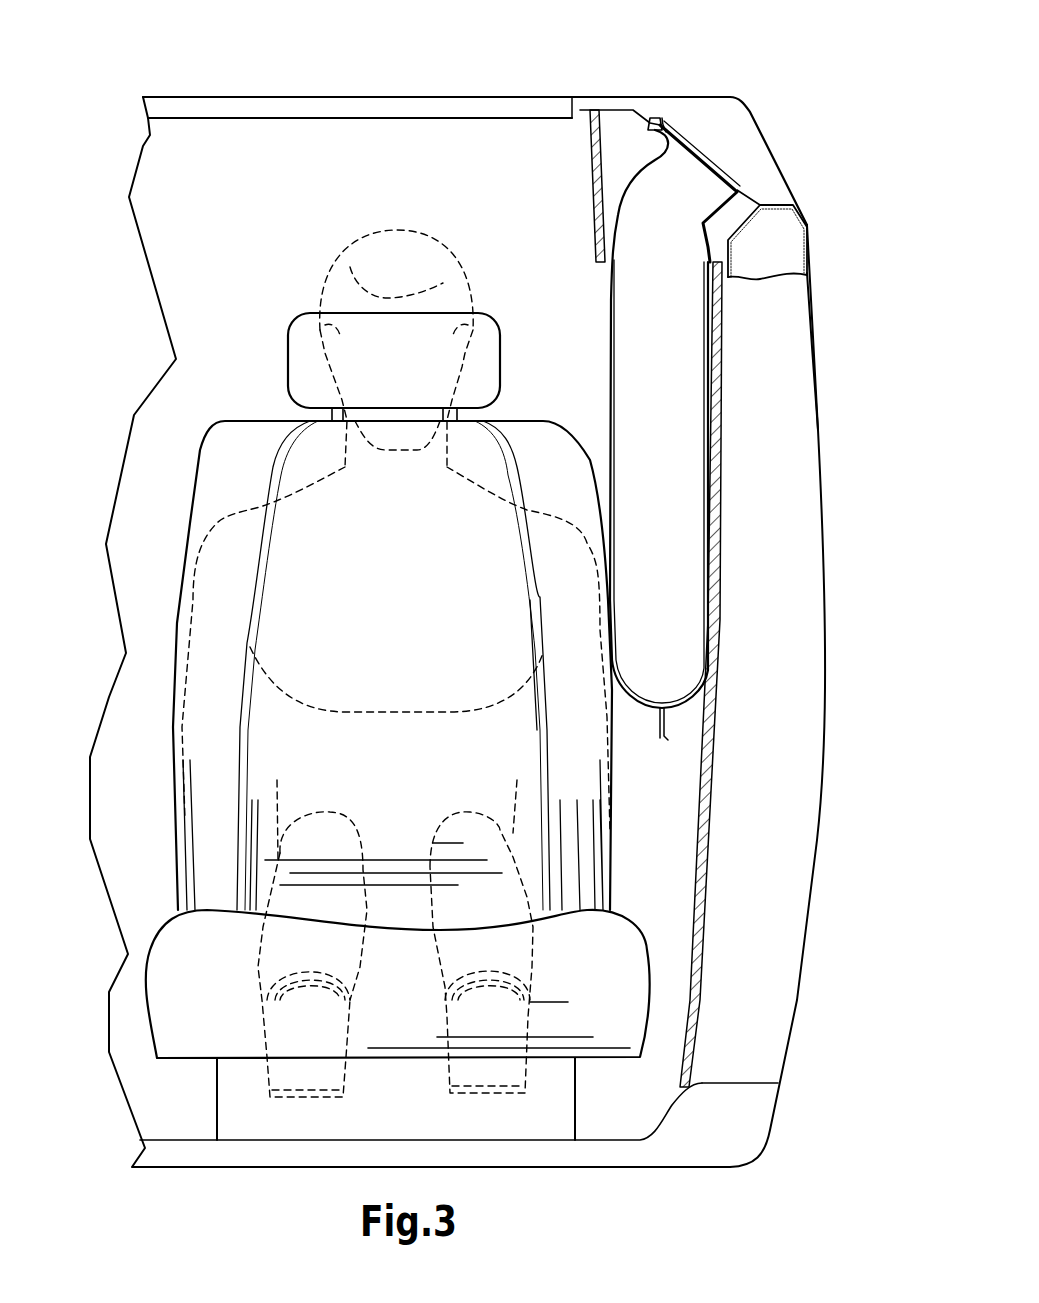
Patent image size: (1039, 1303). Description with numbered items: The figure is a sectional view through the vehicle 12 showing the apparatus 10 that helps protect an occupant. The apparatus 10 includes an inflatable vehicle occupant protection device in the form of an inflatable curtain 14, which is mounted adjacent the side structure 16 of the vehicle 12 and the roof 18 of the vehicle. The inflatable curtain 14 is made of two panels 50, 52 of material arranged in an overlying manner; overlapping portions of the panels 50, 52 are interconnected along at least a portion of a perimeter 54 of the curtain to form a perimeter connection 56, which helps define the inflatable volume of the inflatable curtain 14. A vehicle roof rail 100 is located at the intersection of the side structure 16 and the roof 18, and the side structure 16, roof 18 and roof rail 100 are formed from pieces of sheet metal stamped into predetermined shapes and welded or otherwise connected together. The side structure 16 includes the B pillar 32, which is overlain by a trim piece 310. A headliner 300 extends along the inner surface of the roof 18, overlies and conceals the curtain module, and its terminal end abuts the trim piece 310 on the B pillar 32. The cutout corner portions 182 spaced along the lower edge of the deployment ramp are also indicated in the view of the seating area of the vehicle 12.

The apparatus 10 is at (697, 86).
The vehicle 12 is at (247, 73).
The inflatable curtain 14 is at (608, 332).
The side structure 16 is at (800, 370).
The roof 18 is at (407, 107).
The B pillar 32 is at (767, 250).
The panel 50 is at (710, 345).
The panel 52 is at (610, 390).
The perimeter 54 is at (660, 728).
The perimeter connection 56 is at (665, 736).
The vehicle roof rail 100 is at (777, 149).
The cutout corner portions 182 is at (333, 593).
The headliner 300 is at (606, 185).
The trim piece 310 is at (718, 728).